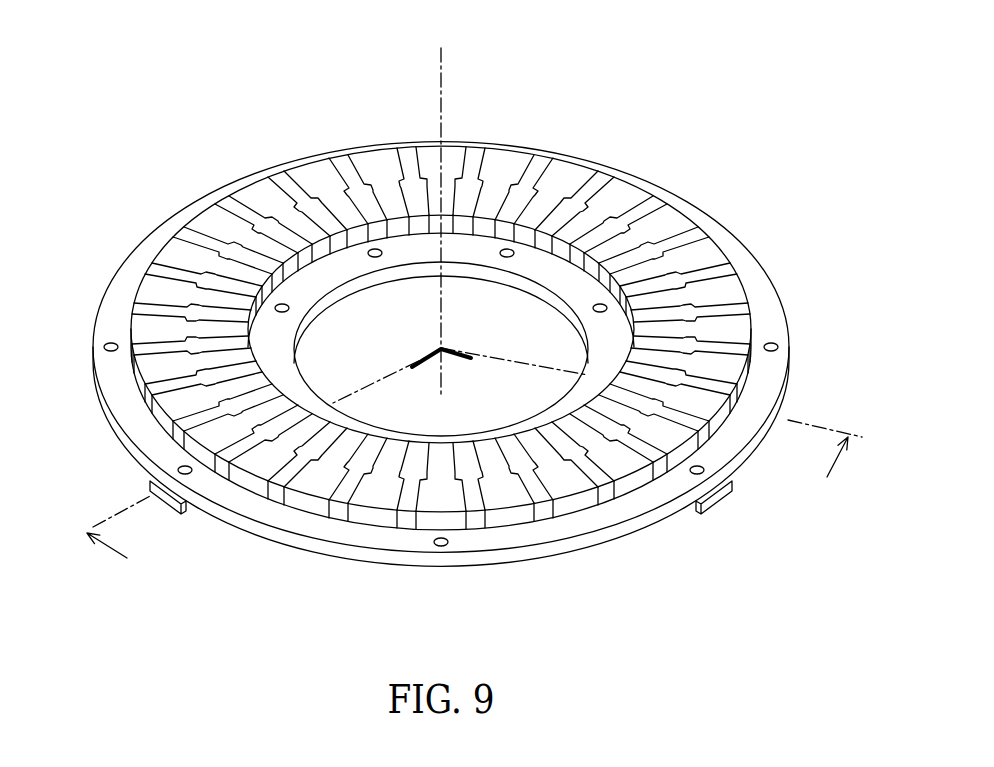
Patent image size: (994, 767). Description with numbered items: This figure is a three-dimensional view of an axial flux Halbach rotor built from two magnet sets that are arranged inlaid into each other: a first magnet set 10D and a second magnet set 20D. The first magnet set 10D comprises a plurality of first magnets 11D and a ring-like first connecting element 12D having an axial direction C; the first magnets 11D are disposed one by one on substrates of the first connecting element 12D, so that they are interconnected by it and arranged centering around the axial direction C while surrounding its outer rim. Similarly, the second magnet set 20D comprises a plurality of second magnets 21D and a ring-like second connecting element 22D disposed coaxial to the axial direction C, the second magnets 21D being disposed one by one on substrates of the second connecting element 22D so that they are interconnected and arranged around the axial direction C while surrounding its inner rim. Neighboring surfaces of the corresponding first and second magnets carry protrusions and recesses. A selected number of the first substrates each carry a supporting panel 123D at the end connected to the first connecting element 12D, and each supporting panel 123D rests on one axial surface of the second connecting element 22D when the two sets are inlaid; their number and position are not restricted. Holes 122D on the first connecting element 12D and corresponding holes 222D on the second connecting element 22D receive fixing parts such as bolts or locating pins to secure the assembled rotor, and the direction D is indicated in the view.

The first magnet set 10D is at (441, 344).
The first magnets 11D is at (430, 153).
The first connecting element 12D is at (407, 157).
The second magnet set 20D is at (452, 405).
The second magnets 21D is at (710, 385).
The second connecting element 22D is at (387, 547).
The holes 122D is at (593, 306).
The hole 222D is at (773, 343).
The supporting panel 123D is at (719, 493).
The axial direction C is at (440, 203).
The reference direction D is at (474, 503).